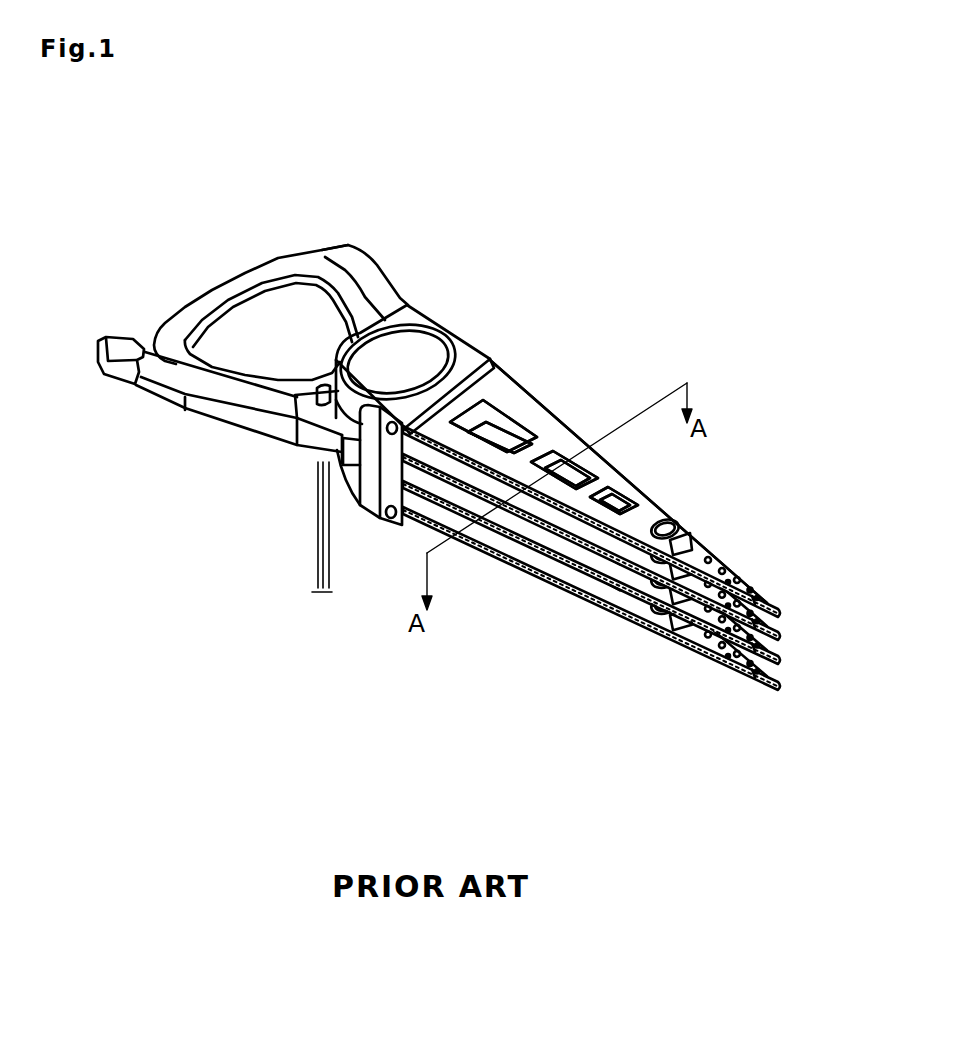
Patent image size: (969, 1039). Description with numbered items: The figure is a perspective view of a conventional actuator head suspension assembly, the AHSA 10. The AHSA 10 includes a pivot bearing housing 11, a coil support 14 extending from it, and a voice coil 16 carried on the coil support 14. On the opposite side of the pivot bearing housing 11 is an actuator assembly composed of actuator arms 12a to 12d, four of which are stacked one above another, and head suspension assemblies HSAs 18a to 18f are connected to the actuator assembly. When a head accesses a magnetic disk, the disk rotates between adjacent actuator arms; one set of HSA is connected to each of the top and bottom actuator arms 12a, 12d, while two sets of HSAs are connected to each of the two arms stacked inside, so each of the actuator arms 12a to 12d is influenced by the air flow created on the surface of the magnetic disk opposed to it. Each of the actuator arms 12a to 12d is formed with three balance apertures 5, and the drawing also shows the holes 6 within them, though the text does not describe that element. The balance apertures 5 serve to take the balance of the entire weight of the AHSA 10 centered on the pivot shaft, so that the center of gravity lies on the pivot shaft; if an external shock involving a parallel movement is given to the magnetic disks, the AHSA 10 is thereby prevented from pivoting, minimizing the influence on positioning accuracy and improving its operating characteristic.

The AHSA 10 is at (556, 382).
The pivot bearing housing 11 is at (425, 316).
The coil support 14 is at (213, 410).
The voice coil 16 is at (218, 292).
The balance apertures 5 is at (488, 417).
The hole in load beam 6 is at (508, 423).
The actuator arm 12a is at (636, 529).
The actuator arm 12d is at (636, 529).
The HSA 18a is at (636, 529).
The HSA 18f is at (733, 568).